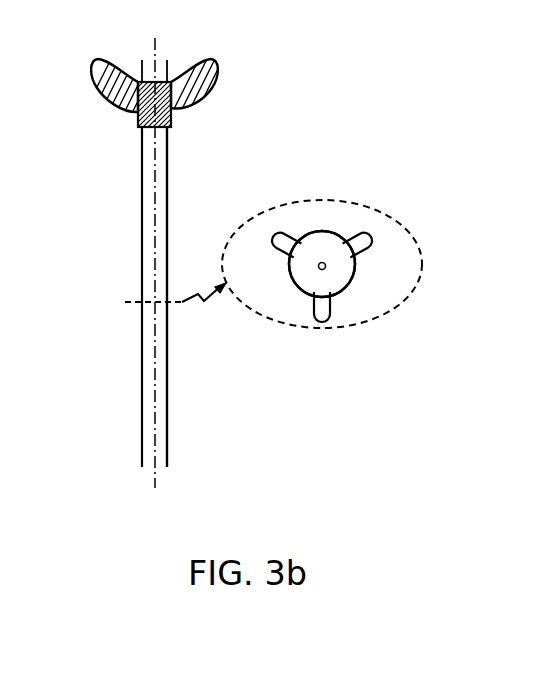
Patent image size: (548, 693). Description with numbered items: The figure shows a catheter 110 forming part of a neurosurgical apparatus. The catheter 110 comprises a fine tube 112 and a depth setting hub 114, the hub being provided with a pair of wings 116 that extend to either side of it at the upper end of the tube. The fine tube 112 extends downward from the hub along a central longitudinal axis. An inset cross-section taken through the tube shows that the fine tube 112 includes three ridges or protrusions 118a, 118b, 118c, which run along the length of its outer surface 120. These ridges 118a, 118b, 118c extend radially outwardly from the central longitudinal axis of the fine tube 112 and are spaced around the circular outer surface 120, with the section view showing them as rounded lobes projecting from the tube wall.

The catheter 110 is at (86, 374).
The fine tube 112 is at (168, 207).
The depth setting hub 114 is at (171, 82).
The wings 116 is at (103, 57).
The first protrusion 118a is at (285, 247).
The second protrusion 118b is at (369, 243).
The third protrusion 118c is at (332, 308).
The outer surface 120 is at (342, 232).